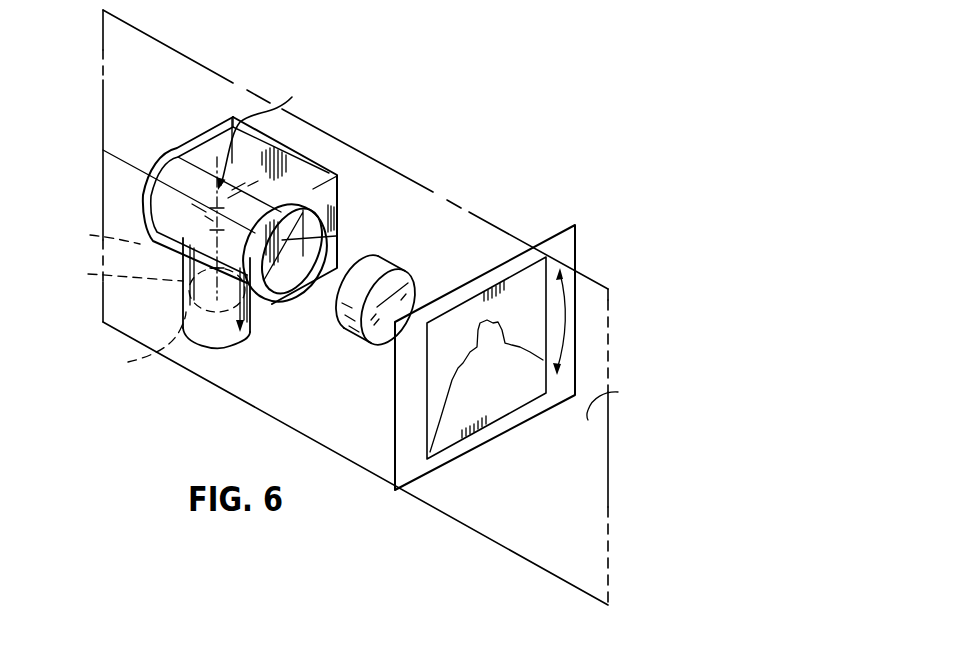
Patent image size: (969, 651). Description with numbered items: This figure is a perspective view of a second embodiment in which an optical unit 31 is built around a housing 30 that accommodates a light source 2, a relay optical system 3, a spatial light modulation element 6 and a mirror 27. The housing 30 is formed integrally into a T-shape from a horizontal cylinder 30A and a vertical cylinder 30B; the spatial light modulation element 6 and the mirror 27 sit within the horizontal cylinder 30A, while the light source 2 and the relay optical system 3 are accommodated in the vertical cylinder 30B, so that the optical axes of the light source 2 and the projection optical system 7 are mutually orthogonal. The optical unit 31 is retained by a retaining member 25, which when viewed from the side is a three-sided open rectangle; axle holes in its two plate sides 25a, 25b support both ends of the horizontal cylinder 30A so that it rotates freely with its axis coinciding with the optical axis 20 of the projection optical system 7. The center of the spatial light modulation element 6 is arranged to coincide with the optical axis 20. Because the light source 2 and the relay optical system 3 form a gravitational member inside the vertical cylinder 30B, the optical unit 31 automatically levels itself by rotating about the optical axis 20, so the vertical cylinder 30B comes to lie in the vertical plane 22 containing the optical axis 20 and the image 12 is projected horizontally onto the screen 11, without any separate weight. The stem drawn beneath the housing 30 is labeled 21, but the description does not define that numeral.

The light source 2 is at (145, 346).
The relay optical system 3 is at (157, 287).
The spatial light modulation element 6 is at (317, 229).
The projection optical system 7 is at (375, 272).
The screen 11 is at (563, 240).
The image 12 is at (525, 288).
The optical axis 20 is at (613, 392).
The support stem 21 is at (218, 338).
The vertical plane 22 is at (585, 525).
The retaining member 25 is at (324, 200).
The plate side 25a is at (166, 157).
The plate side 25b is at (310, 186).
The mirror 27 is at (96, 236).
The housing 30 is at (148, 220).
The horizontal cylinder 30A is at (203, 168).
The vertical cylinder 30B is at (199, 338).
The optical unit 31 is at (264, 129).